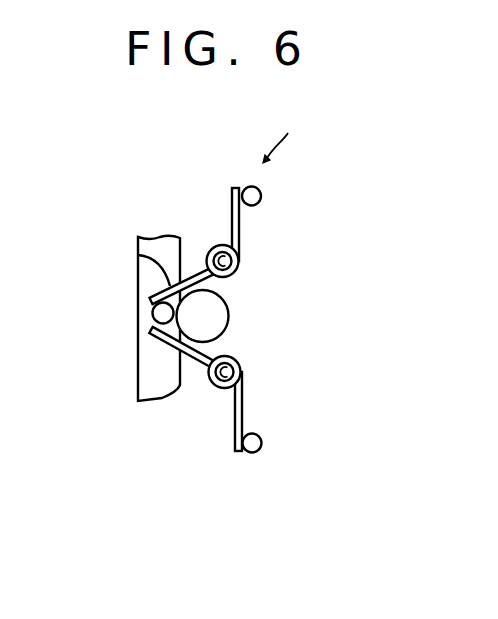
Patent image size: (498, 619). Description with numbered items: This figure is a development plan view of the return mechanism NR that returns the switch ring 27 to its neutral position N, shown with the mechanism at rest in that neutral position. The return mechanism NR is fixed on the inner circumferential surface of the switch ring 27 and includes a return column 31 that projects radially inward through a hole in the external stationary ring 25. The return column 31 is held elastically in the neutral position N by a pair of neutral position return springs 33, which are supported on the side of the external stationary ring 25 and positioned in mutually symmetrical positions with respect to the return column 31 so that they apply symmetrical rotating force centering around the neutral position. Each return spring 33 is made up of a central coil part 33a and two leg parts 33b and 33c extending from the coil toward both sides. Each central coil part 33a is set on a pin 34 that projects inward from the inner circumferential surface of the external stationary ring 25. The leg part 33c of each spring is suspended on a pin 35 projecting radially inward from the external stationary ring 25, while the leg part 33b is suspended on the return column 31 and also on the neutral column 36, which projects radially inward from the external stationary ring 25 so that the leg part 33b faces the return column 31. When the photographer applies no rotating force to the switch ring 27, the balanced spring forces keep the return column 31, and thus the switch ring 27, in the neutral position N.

The return mechanism NR is at (317, 130).
The switch ring 27 is at (145, 373).
The neutral position N is at (143, 315).
The return column 31 is at (154, 306).
The neutral position return springs 33 is at (220, 324).
The central coil part 33a is at (211, 249).
The leg part 33b is at (138, 257).
The leg part 33c is at (240, 225).
The pin 34 is at (239, 266).
The pin 35 is at (262, 197).
The neutral column 36 is at (229, 310).
The external stationary ring 25 is at (276, 321).